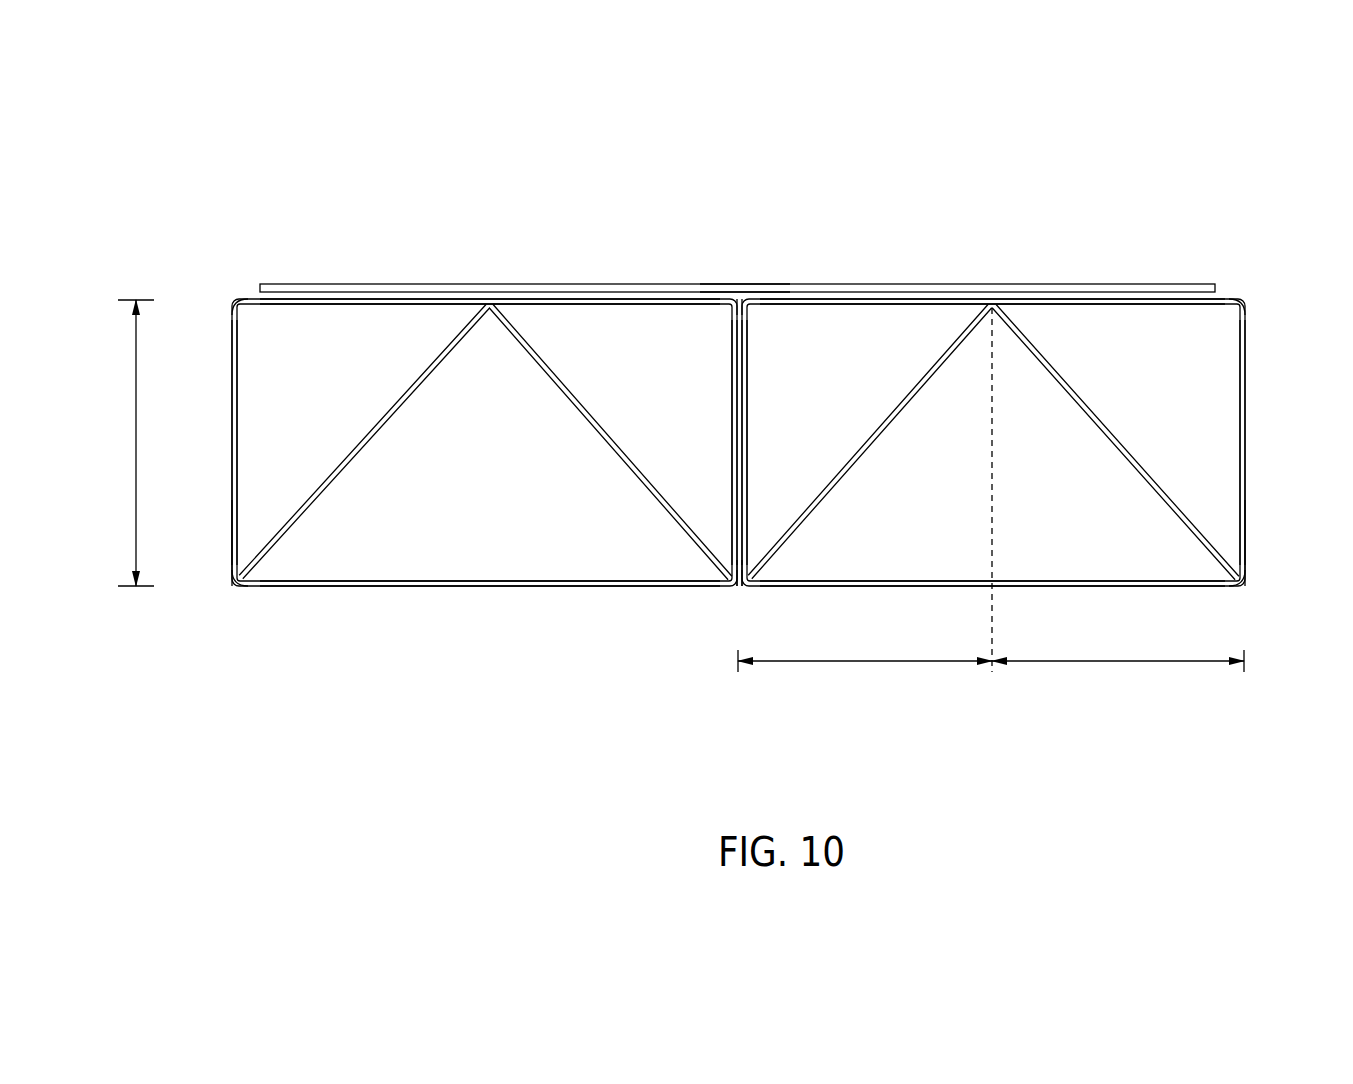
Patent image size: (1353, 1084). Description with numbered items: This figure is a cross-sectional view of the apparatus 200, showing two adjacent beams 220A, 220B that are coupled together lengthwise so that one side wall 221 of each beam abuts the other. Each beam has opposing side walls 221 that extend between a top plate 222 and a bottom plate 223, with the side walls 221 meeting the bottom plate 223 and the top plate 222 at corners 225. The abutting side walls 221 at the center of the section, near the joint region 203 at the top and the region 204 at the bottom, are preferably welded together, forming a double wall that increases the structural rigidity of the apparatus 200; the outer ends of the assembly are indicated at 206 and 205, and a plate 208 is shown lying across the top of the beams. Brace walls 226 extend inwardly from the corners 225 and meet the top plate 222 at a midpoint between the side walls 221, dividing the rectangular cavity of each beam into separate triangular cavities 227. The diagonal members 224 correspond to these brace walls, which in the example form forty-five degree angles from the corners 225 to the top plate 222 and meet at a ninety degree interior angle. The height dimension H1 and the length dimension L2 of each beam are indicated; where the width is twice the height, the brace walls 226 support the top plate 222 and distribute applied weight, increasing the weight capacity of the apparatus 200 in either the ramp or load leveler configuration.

The apparatus 200 is at (743, 447).
The joint between truss modules 203 is at (744, 247).
The bottom joint 204 is at (680, 625).
The right end 205 is at (1268, 545).
The left end 206 is at (228, 550).
The top plate 208 is at (898, 285).
The first truss module 220A is at (453, 625).
The second truss module 220B is at (1055, 680).
The side walls 221 is at (232, 415).
The top plate 222 is at (585, 308).
The bottom plate 223 is at (503, 578).
The diagonal member 224 is at (380, 430).
The corners 225 is at (257, 598).
The brace walls 226 is at (255, 315).
The triangular cavities 227 is at (350, 340).
The height dimension H1 is at (133, 392).
The length dimension L2 is at (838, 665).